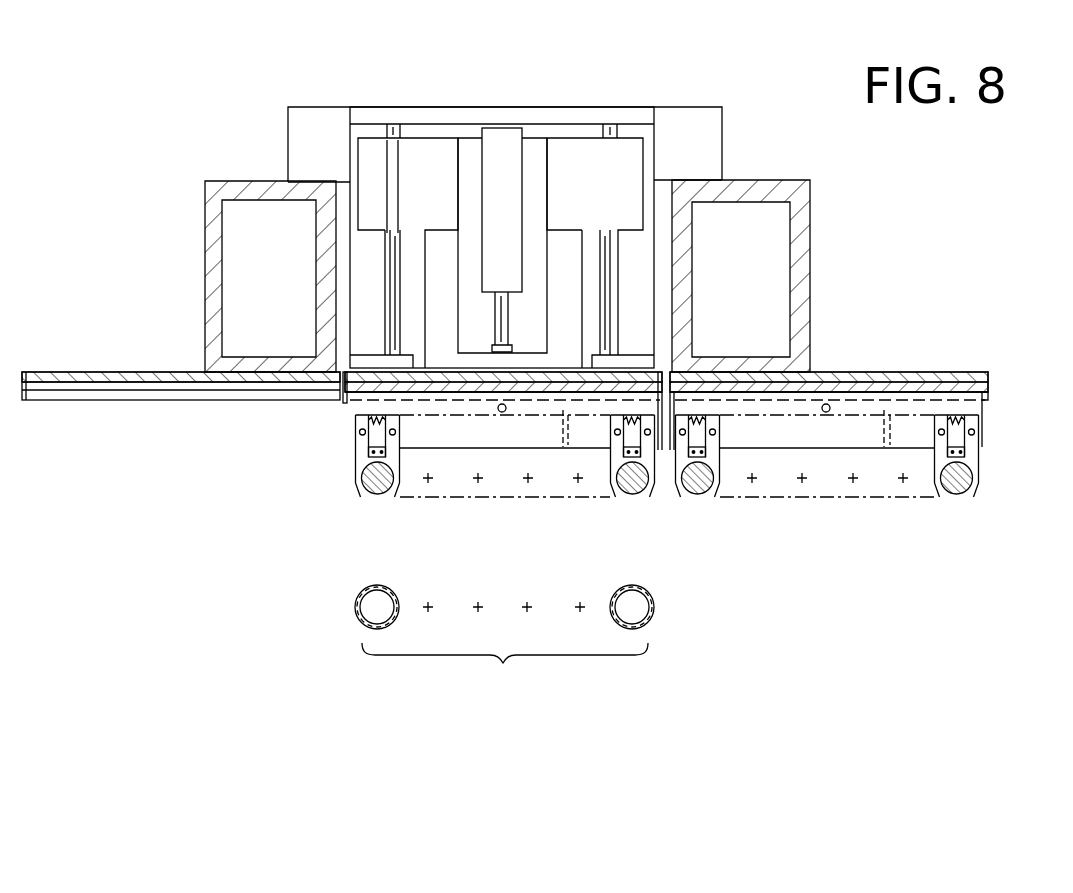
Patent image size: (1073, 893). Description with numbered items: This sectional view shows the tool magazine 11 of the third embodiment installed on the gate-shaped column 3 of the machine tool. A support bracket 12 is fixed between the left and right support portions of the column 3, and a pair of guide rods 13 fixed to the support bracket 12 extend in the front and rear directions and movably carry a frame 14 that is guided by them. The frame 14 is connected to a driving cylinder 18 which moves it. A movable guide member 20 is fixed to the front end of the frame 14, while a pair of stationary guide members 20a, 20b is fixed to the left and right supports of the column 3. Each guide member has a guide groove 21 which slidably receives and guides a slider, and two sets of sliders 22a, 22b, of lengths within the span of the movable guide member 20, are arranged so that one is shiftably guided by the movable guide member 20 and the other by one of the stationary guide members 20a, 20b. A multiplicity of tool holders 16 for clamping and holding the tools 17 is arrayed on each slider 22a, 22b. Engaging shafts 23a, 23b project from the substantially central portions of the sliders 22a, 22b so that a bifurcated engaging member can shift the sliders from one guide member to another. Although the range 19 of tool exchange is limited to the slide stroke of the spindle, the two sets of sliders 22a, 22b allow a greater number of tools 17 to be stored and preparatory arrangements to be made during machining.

The column 3 is at (797, 243).
The tool magazine 11 is at (385, 524).
The support bracket 12 is at (708, 158).
The guide rod 13 is at (390, 262).
The frame 14 is at (445, 218).
The tool holder 16 is at (657, 493).
The tool 17 is at (630, 485).
The driving cylinder 18 is at (508, 147).
The range of tool exchange 19 is at (504, 642).
The movable guide member 20 is at (370, 383).
The left stationary guide member 20a is at (82, 372).
The right stationary guide member 20b is at (917, 372).
The guide groove 21 is at (103, 385).
The slider 22a is at (517, 440).
The slider 22b is at (843, 443).
The engaging shaft 23a is at (501, 413).
The engaging shaft 23b is at (823, 413).